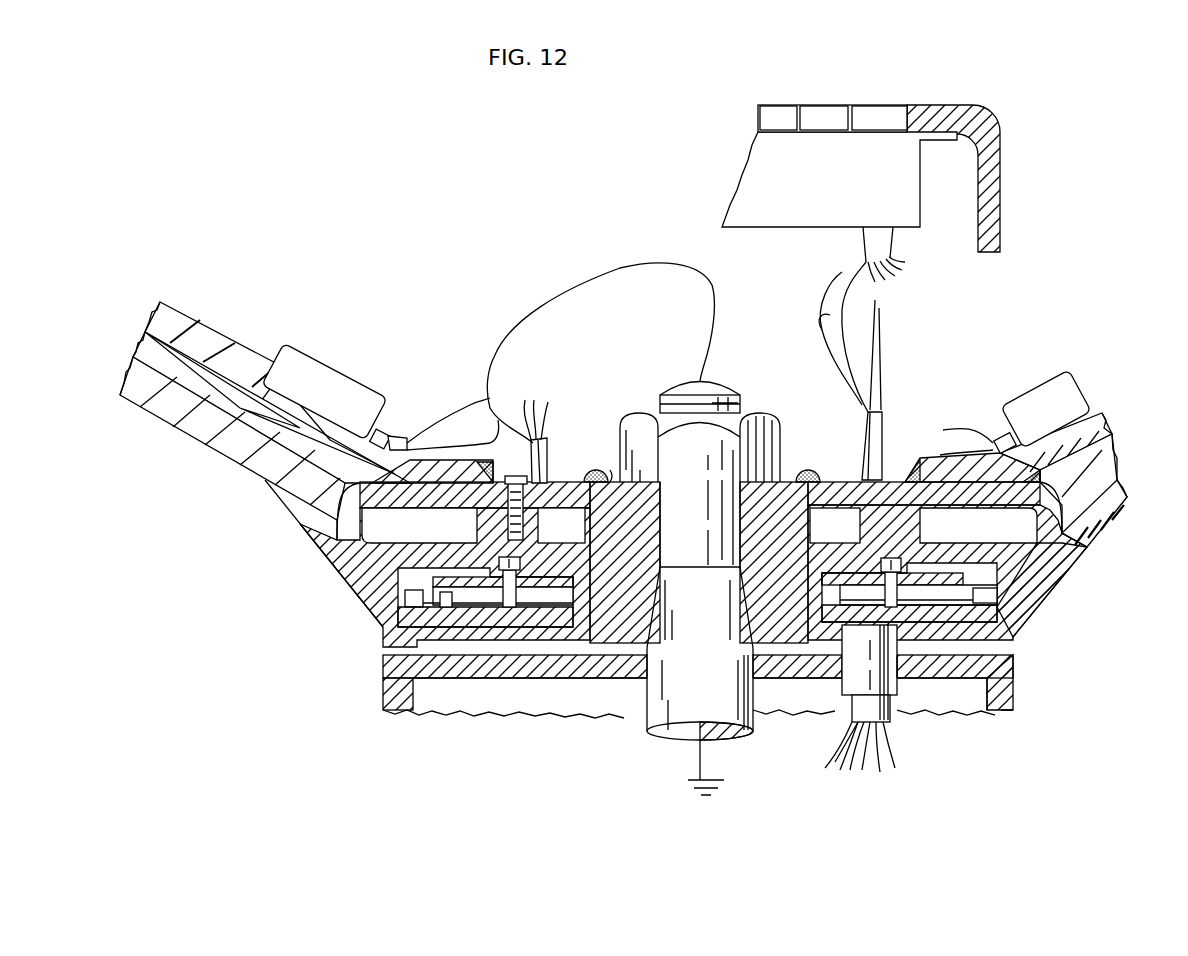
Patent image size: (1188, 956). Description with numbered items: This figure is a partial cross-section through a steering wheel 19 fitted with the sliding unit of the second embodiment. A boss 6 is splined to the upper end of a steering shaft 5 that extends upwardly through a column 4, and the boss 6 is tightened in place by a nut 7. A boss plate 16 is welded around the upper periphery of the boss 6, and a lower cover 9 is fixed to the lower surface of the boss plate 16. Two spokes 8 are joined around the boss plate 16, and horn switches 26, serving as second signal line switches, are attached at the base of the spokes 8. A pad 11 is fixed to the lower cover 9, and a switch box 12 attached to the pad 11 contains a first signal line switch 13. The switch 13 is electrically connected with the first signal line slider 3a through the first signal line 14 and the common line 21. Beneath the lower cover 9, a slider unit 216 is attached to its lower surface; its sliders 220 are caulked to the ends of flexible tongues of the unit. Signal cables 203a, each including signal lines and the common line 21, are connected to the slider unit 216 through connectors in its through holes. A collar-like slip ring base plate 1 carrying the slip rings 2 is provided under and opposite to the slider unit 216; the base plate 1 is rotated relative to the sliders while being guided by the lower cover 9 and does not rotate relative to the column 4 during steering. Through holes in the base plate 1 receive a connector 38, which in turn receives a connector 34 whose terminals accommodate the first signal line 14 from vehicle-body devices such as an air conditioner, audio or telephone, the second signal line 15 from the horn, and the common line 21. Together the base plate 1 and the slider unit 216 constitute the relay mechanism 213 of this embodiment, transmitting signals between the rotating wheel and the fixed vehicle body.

The slip ring base plate 1 is at (579, 604).
The slip rings 2 is at (450, 607).
The first signal line slider 3a is at (546, 447).
The column 4 is at (1005, 693).
The steering shaft 5 is at (643, 728).
The boss 6 is at (608, 481).
The nut 7 is at (626, 430).
The spokes 8 is at (192, 362).
The lower cover 9 is at (1043, 577).
The pad 11 is at (1000, 143).
The switch box 12 is at (911, 197).
The first signal line switch 13 is at (790, 104).
The first signal line 14 is at (552, 396).
The second signal line 15 is at (564, 300).
The boss plate 16 is at (566, 483).
The steering wheel 19 is at (1062, 291).
The common line 21 is at (851, 291).
The horn switches 26 is at (336, 390).
The connector 34 is at (843, 693).
The connector 38 is at (904, 669).
The signal cables 203a is at (865, 240).
The relay mechanism 213 is at (415, 565).
The slider unit 216 is at (540, 570).
The sliders 220 is at (448, 577).